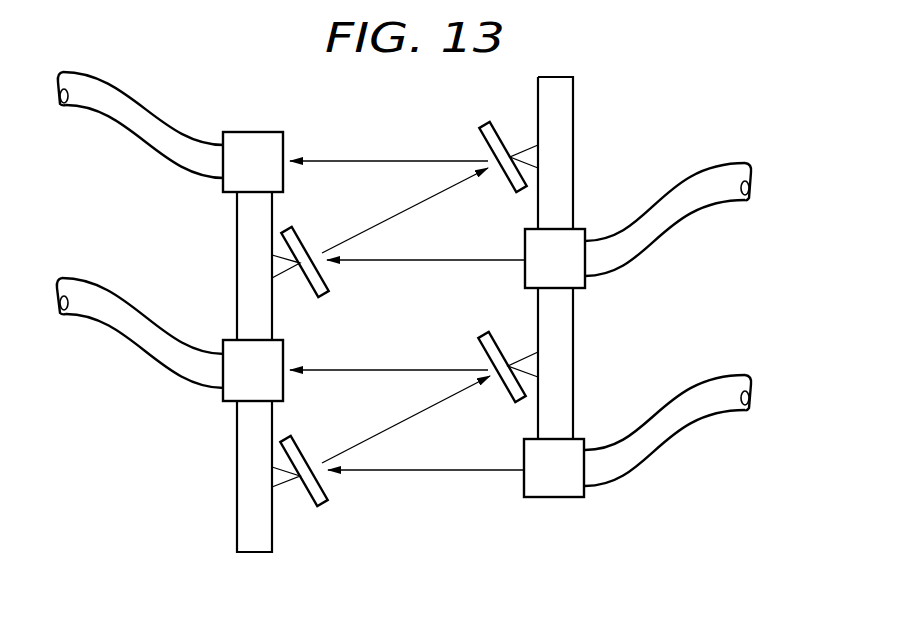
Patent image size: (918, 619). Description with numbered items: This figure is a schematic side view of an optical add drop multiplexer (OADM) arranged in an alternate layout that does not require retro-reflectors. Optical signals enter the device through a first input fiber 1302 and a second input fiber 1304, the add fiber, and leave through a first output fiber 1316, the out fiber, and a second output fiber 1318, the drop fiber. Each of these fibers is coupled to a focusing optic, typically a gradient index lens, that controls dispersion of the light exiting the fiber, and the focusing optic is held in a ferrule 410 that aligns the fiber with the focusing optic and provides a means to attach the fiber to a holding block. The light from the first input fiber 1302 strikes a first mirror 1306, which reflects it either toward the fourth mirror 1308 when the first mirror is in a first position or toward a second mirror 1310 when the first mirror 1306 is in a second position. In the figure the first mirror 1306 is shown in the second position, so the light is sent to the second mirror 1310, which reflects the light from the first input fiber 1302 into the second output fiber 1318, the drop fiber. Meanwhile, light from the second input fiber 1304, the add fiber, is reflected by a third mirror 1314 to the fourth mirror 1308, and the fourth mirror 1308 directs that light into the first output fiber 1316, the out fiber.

The ferrule 410 is at (253, 138).
The first input fiber 1302 is at (714, 172).
The second input fiber 1304 is at (715, 410).
The first mirror 1306 is at (318, 222).
The fourth mirror 1308 is at (485, 338).
The second mirror 1310 is at (487, 130).
The third mirror 1314 is at (318, 500).
The first output fiber 1316 is at (100, 312).
The second output fiber 1318 is at (100, 78).